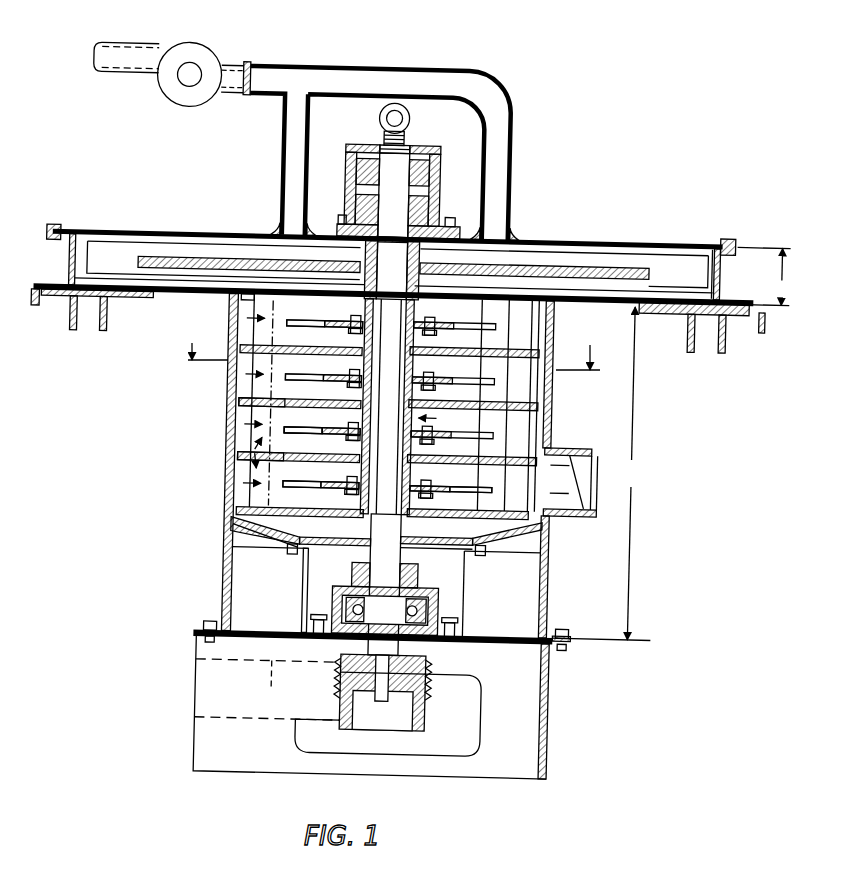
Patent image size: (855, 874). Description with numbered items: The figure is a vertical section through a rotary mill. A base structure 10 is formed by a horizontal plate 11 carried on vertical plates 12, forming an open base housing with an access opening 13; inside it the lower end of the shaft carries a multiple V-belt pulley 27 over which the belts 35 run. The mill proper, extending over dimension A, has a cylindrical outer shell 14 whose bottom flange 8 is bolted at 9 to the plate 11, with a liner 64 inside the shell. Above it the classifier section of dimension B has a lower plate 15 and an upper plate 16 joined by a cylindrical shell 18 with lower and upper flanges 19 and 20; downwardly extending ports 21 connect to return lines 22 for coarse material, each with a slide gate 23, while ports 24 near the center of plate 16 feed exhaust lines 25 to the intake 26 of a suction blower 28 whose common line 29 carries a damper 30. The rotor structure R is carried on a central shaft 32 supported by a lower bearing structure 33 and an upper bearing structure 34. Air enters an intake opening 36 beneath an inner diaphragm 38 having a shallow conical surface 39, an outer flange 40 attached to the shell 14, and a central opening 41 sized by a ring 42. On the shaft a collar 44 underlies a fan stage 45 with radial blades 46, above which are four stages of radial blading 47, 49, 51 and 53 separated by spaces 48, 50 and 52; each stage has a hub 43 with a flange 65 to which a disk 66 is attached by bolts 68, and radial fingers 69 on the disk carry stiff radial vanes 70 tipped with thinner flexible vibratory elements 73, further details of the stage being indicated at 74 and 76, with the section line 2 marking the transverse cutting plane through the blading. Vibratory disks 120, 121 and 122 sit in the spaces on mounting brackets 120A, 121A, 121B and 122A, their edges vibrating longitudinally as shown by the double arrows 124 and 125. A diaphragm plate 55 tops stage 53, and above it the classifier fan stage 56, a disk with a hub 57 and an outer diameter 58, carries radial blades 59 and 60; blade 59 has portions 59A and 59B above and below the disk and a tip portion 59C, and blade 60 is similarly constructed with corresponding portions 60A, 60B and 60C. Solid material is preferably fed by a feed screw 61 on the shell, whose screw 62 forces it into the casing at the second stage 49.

The bottom flange 8 is at (566, 632).
The bolts 9 is at (208, 628).
The base structure 10 is at (551, 720).
The horizontal plate 11 is at (494, 645).
The vertical plates 12 is at (553, 680).
The access opening 13 is at (478, 723).
The cylindrical outer shell 14 is at (550, 594).
The lower plate 15 is at (589, 305).
The upper plate 16 is at (594, 242).
The cylindrical shell 18 is at (722, 292).
The lower flange 19 is at (736, 311).
The upper flange 20 is at (735, 252).
The downwardly extending ports 21 is at (98, 322).
The return lines 22 is at (68, 322).
The slide gate 23 is at (30, 304).
The ports 24 is at (276, 228).
The exhaust lines 25 is at (281, 152).
The intake 26 is at (192, 80).
The multiple V-belt pulley 27 is at (432, 672).
The suction blower 28 is at (196, 58).
The common line 29 is at (286, 66).
The damper 30 is at (242, 90).
The central rotatable shaft 32 is at (408, 557).
The bearing structure 33 is at (440, 609).
The bearing structure 34 is at (440, 172).
The belts 35 is at (267, 689).
The air intake opening 36 is at (469, 578).
The inner diaphragm 38 is at (528, 550).
The conical inner surface 39 is at (288, 553).
The outer flange 40 is at (238, 560).
The central opening 41 is at (345, 551).
The ring 42 is at (306, 560).
The hub 43 is at (418, 322).
The collar 44 is at (362, 514).
The fan stage 45 is at (231, 521).
The radial blades 46 is at (236, 530).
The stage of radial blading 47 is at (232, 495).
The space 48 is at (232, 461).
The stage of radial blading 49 is at (232, 436).
The space 50 is at (232, 408).
The stage of radial blading 51 is at (232, 390).
The space 52 is at (232, 348).
The stage of radial blading 53 is at (237, 324).
The diaphragm plate 55 is at (232, 311).
The fan stage 56 is at (190, 262).
The hub 57 is at (366, 270).
The outer diameter 58 is at (143, 252).
The radial blade 59 is at (70, 247).
The blade portion 59A is at (202, 284).
The blade portion 59B is at (228, 256).
The tip portion 59C is at (72, 266).
The radial blade 60 is at (686, 260).
The lower line 60A is at (604, 293).
The chamber top 60B is at (570, 256).
The corner 60C is at (710, 246).
The feed screw 61 is at (574, 447).
The screw 62 is at (582, 470).
The liner 64 is at (553, 401).
The flange 65 is at (352, 334).
The disk 66 is at (351, 324).
The bolts 68 is at (357, 355).
The radial fingers 69 is at (300, 330).
The radial vane 70 is at (305, 322).
The flexible vibratory elements 73 is at (232, 336).
The frame corner 74 is at (272, 318).
The frame line 76 is at (515, 316).
The vibratory disk 120 is at (232, 450).
The mounting bracket 120A is at (290, 465).
The vibratory disk 121 is at (232, 423).
The mounting bracket 121A is at (296, 438).
The mounting bracket 121B is at (290, 411).
The vibratory disk 122 is at (232, 377).
The mounting bracket 122A is at (296, 384).
The double arrow 124 is at (232, 479).
The double arrow 125 is at (296, 491).
The milling section dimension A is at (629, 473).
The classifier section dimension B is at (754, 276).
The rotor structure R is at (439, 419).
The section line 2 is at (391, 355).